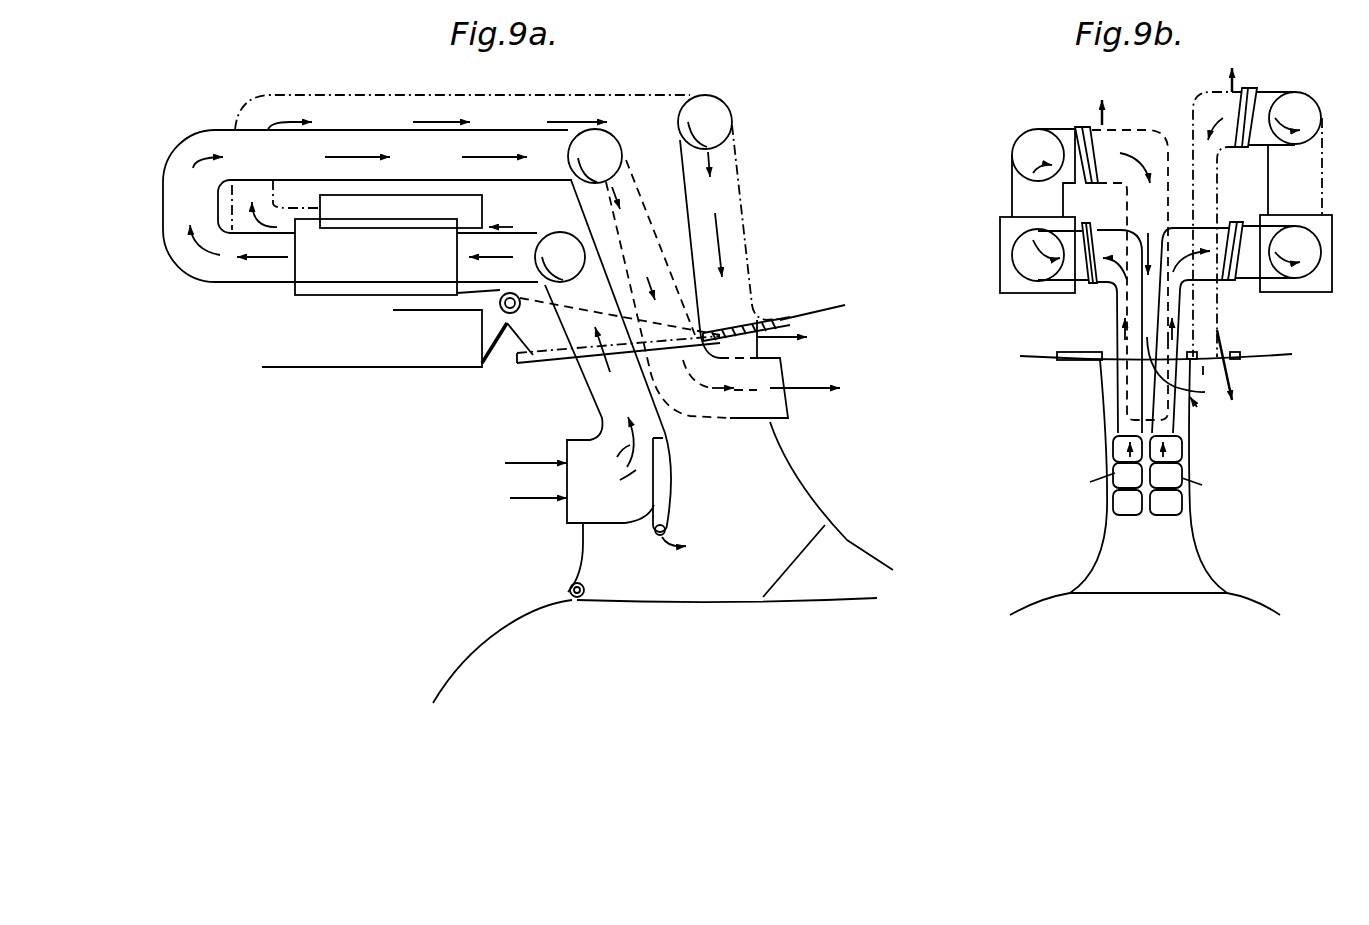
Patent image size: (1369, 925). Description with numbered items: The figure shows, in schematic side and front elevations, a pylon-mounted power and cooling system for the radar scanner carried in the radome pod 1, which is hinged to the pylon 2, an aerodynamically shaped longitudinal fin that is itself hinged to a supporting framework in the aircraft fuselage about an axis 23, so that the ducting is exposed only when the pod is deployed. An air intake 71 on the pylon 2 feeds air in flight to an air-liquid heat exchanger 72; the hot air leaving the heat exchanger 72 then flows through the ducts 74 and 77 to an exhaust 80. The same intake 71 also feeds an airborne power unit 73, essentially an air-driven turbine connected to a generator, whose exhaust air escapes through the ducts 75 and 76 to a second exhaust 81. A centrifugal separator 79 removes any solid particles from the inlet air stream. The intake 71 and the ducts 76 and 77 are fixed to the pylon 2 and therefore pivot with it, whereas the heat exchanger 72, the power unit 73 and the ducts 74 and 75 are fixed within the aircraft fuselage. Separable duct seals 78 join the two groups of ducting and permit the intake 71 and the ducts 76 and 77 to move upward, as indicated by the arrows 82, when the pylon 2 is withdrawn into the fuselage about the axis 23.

In FIG. 9A, the radome pod 1 is at (525, 617).
In FIG. 9B, the radome pod 1 is at (1060, 582).
In FIG. 9A, the pylon 2 is at (800, 507).
In FIG. 9B, the pylon 2 is at (1185, 521).
In FIG. 9A, the axis 23 is at (498, 311).
In FIG. 9A, the air intake 71 is at (578, 515).
In FIG. 9B, the air intake 71 is at (1115, 322).
In FIG. 9A, the air-liquid heat exchanger 72 is at (325, 295).
In FIG. 9B, the air-liquid heat exchanger 72 is at (1022, 292).
In FIG. 9A, the airborne power unit 73 is at (447, 196).
In FIG. 9B, the airborne power unit 73 is at (1298, 292).
In FIG. 9A, the duct 74 is at (216, 128).
In FIG. 9B, the duct 74 is at (1012, 182).
In FIG. 9A, the duct 75 is at (338, 92).
In FIG. 9B, the duct 75 is at (1325, 175).
In FIG. 9A, the duct 76 is at (742, 212).
In FIG. 9B, the duct 76 is at (1193, 105).
In FIG. 9A, the duct 77 is at (647, 190).
In FIG. 9B, the duct 77 is at (1140, 127).
In FIG. 9A, the separable duct seals 78 is at (722, 106).
In FIG. 9B, the separable duct seals 78 is at (1088, 225).
In FIG. 9A, the centrifugal separator 79 is at (673, 477).
In FIG. 9A, the exhaust 80 is at (788, 410).
In FIG. 9B, the exhaust 80 is at (1125, 410).
In FIG. 9A, the exhaust 81 is at (757, 350).
In FIG. 9B, the exhaust 81 is at (1189, 368).
In FIG. 9B, the arrows 82 is at (1147, 125).